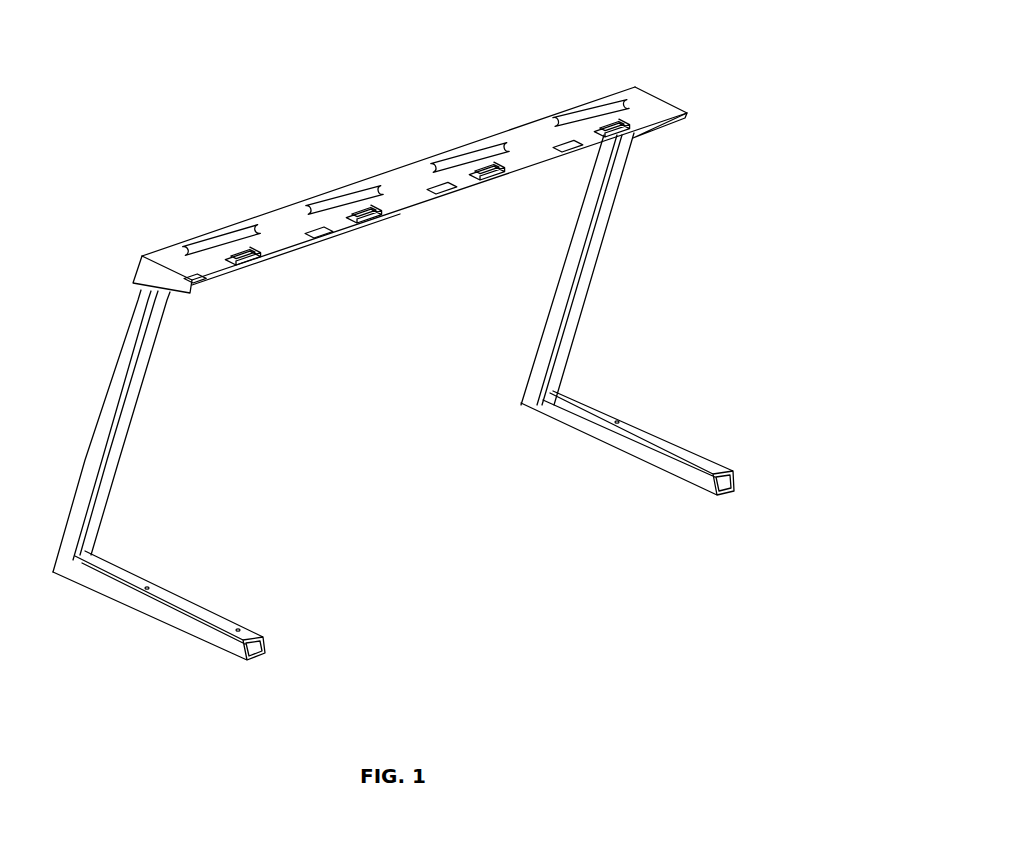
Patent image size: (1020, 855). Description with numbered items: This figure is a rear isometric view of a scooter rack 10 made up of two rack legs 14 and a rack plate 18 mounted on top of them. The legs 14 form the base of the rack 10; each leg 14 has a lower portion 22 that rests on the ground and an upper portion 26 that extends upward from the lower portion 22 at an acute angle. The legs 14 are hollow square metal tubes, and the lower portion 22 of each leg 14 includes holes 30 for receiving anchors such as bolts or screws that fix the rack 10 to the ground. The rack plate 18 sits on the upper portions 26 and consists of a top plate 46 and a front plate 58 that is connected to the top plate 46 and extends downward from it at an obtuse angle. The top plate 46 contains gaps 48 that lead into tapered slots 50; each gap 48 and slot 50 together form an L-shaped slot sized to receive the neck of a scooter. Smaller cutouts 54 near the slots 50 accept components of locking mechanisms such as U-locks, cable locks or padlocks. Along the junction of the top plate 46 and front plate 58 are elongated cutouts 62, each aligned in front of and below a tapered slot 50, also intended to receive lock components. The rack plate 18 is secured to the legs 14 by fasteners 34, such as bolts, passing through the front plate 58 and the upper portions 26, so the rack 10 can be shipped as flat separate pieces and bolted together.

The scooter rack 10 is at (388, 123).
The rack legs 14 is at (615, 318).
The rack plate 18 is at (665, 102).
The lower portion 22 is at (656, 458).
The upper portion 26 is at (591, 216).
The holes 30 is at (708, 466).
The fasteners 34 is at (158, 305).
The top plate 46 is at (277, 216).
The gaps 48 is at (227, 272).
The tapered slots 50 is at (236, 240).
The cutouts 54 is at (313, 254).
The front plate 58 is at (467, 182).
The elongated cutouts 62 is at (445, 152).